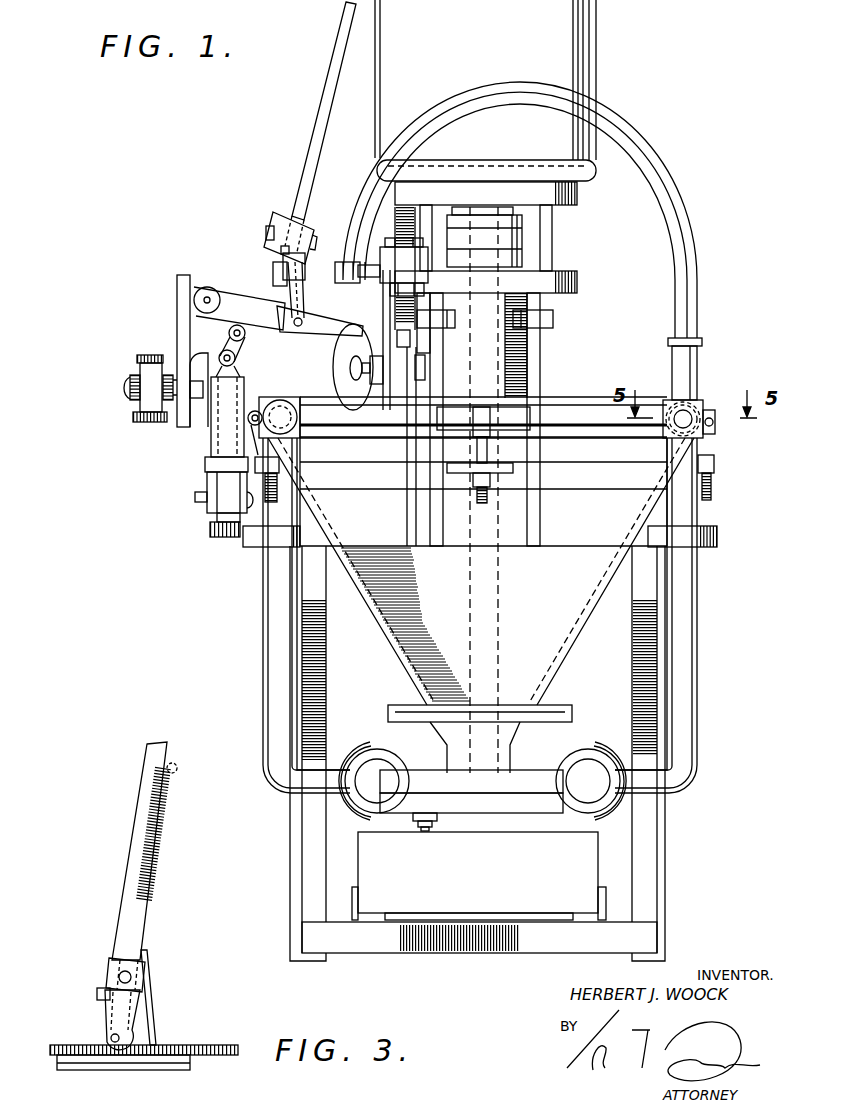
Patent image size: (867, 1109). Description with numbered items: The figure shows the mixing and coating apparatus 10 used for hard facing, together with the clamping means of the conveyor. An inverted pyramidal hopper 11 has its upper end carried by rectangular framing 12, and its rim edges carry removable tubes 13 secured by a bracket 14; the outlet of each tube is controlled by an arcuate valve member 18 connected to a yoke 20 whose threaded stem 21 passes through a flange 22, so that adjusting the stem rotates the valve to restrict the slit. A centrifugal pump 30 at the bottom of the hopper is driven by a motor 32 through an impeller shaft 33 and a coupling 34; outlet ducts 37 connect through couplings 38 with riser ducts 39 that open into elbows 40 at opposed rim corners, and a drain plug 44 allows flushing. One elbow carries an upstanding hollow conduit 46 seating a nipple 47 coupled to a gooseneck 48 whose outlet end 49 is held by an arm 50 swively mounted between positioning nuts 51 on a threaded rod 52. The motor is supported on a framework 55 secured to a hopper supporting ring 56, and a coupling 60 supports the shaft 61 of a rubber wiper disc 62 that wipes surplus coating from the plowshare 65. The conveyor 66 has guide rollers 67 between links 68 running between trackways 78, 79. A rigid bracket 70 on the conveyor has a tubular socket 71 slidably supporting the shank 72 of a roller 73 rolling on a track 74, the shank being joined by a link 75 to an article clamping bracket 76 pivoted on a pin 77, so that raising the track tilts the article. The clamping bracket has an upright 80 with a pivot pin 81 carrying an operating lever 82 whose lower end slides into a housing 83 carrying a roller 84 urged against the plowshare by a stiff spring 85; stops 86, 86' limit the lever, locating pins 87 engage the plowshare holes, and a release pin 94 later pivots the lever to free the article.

In FIG. 1, the apparatus 10 is at (212, 623).
In FIG. 1, the inverted pyramidal hopper 11 is at (551, 642).
In FIG. 1, the rectangular framing 12 is at (660, 845).
In FIG. 1, the removable tubes 13 is at (298, 412).
In FIG. 1, the bracket 14 is at (375, 457).
In FIG. 1, the arcuate valve member 18 is at (301, 396).
In FIG. 1, the yoke 20 is at (478, 410).
In FIG. 1, the threaded stem 21 is at (480, 497).
In FIG. 1, the flange 22 is at (510, 473).
In FIG. 1, the centrifugal pump 30 is at (531, 763).
In FIG. 1, the motor 32 is at (566, 27).
In FIG. 1, the impeller shaft 33 is at (499, 607).
In FIG. 1, the coupling 34 is at (517, 236).
In FIG. 1, the outlet ducts 37 is at (383, 767).
In FIG. 1, the couplings 38 is at (352, 752).
In FIG. 1, the riser ducts 39 is at (267, 690).
In FIG. 1, the elbows 40 is at (676, 398).
In FIG. 1, the drain plug 44 is at (424, 831).
In FIG. 1, the upstanding hollow conduit 46 is at (671, 358).
In FIG. 1, the nipple 47 is at (703, 342).
In FIG. 1, the gooseneck 48 is at (671, 173).
In FIG. 1, the outlet end 49 is at (393, 296).
In FIG. 1, the arm 50 is at (365, 262).
In FIG. 1, the positioning nuts 51 is at (408, 255).
In FIG. 1, the threaded rod 52 is at (408, 398).
In FIG. 1, the framework 55 is at (438, 300).
In FIG. 1, the hopper supporting ring 56 is at (610, 503).
In FIG. 1, the coupling 60 is at (378, 388).
In FIG. 1, the shaft 61 is at (293, 402).
In FIG. 1, the rubber wiper disc 62 is at (334, 353).
In FIG. 1, the plowshare 65 is at (338, 313).
In FIG. 3, the plowshare 65 is at (217, 1044).
In FIG. 1, the conveyor 66 is at (102, 388).
In FIG. 1, the guide rollers 67 is at (148, 403).
In FIG. 1, the links 68 is at (130, 375).
In FIG. 1, the rigid bracket 70 is at (177, 288).
In FIG. 1, the tubular socket 71 is at (211, 441).
In FIG. 1, the shank 72 is at (218, 457).
In FIG. 1, the roller 73 is at (217, 518).
In FIG. 1, the track 74 is at (220, 538).
In FIG. 1, the link 75 is at (248, 357).
In FIG. 1, the article clamping bracket 76 is at (272, 288).
In FIG. 3, the article clamping bracket 76 is at (167, 1071).
In FIG. 1, the pin 77 is at (204, 287).
In FIG. 1, the trackway 78 is at (147, 423).
In FIG. 1, the trackway 79 is at (147, 355).
In FIG. 1, the upright 80 is at (268, 258).
In FIG. 3, the upright 80 is at (140, 1014).
In FIG. 1, the pivot pin 81 is at (316, 236).
In FIG. 3, the pivot pin 81 is at (140, 973).
In FIG. 1, the operating lever 82 is at (330, 102).
In FIG. 3, the operating lever 82 is at (130, 857).
In FIG. 1, the housing 83 is at (306, 272).
In FIG. 3, the housing 83 is at (130, 1005).
In FIG. 1, the roller 84 is at (272, 292).
In FIG. 3, the roller 84 is at (123, 1040).
In FIG. 1, the stiff spring 85 is at (280, 255).
In FIG. 3, the stiff spring 85 is at (107, 985).
In FIG. 1, the stop 86 is at (259, 271).
In FIG. 3, the stop 86 is at (80, 1008).
In FIG. 3, the stop 86' is at (177, 985).
In FIG. 1, the locating pins 87 is at (292, 333).
In FIG. 3, the release pin 94 is at (178, 771).